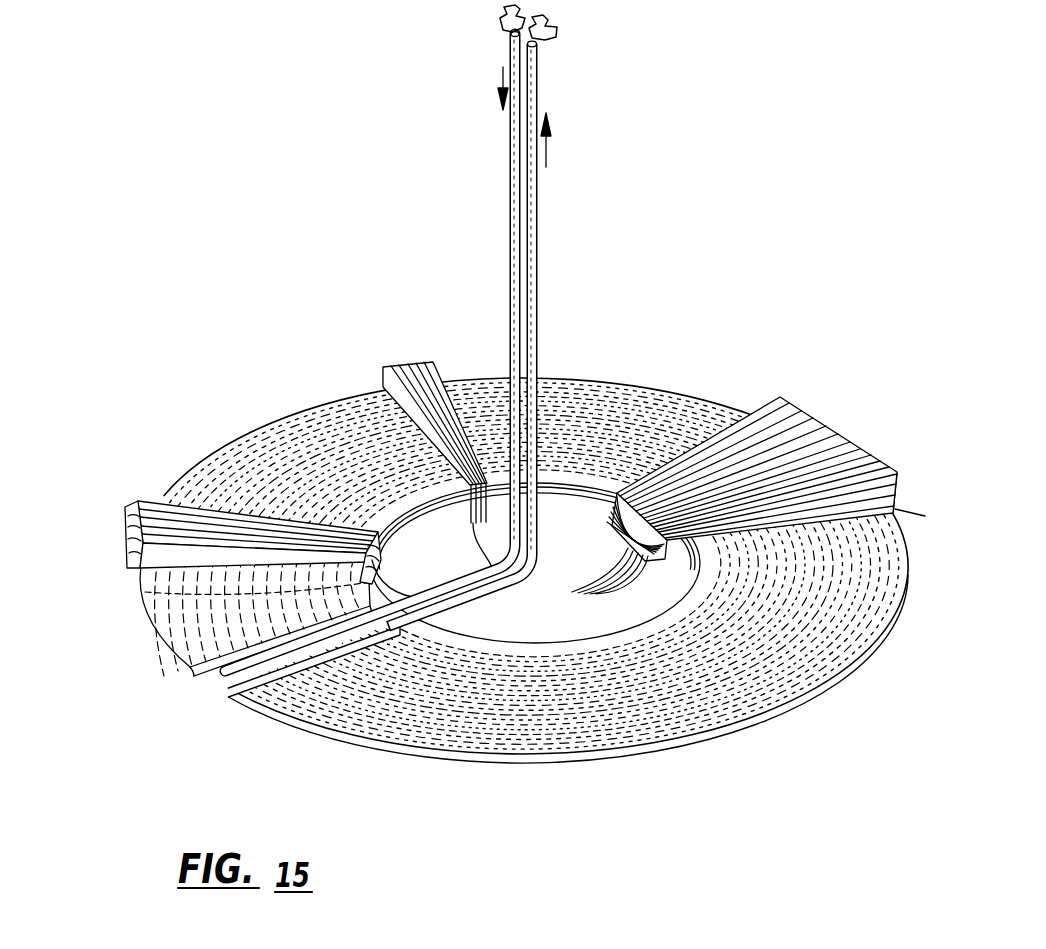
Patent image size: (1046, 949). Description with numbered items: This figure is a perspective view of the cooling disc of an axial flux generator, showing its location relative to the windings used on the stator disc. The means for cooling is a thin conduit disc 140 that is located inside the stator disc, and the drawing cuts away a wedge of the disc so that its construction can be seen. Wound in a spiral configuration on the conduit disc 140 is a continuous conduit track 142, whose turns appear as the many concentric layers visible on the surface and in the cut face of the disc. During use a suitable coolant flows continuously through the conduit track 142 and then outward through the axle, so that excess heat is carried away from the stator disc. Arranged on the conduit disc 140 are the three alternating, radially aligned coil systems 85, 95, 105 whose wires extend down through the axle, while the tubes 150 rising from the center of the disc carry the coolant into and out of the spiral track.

The conduit disc 140 is at (648, 382).
The conduit track 142 is at (146, 606).
The coil system 85 is at (133, 520).
The coil system 95 is at (410, 366).
The coil system 105 is at (850, 438).
The cooling tubes 150 is at (508, 14).